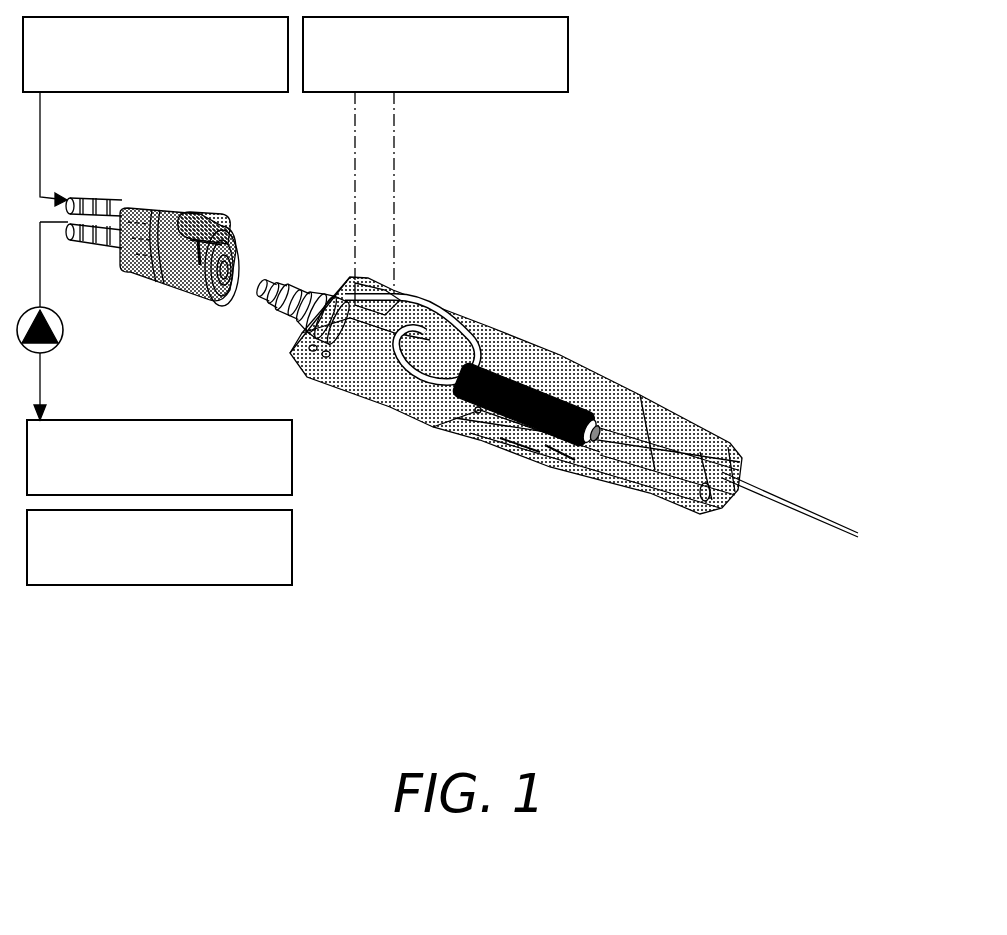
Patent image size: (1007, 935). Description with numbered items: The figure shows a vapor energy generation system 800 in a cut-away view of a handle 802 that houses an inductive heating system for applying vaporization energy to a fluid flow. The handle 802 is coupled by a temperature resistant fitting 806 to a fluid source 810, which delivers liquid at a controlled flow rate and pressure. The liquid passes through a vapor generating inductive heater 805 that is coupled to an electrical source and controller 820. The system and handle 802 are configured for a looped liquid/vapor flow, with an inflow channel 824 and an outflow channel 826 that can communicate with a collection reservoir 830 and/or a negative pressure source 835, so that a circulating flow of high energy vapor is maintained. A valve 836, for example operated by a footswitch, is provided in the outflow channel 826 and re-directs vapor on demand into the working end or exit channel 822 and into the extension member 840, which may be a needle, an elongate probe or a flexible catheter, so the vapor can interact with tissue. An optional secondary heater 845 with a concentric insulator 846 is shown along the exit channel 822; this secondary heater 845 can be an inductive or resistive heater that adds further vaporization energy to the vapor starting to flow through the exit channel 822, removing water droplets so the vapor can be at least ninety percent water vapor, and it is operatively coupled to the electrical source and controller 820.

The vapor energy generation system 800 is at (654, 163).
The handle 802 is at (518, 343).
The vapor generating inductive heater 805 is at (402, 327).
The temperature resistant fitting 806 is at (195, 234).
The fluid source 810 is at (155, 162).
The electrical source and controller 820 is at (435, 158).
The exit channel 822 is at (563, 380).
The inflow channel 824 is at (88, 204).
The outflow channel 826 is at (140, 254).
The collection reservoir 830 is at (159, 547).
The negative pressure source 835 is at (159, 457).
The valve 836 is at (57, 344).
The extension member 840 is at (778, 497).
The secondary heater 845 is at (527, 427).
The concentric insulator 846 is at (557, 437).